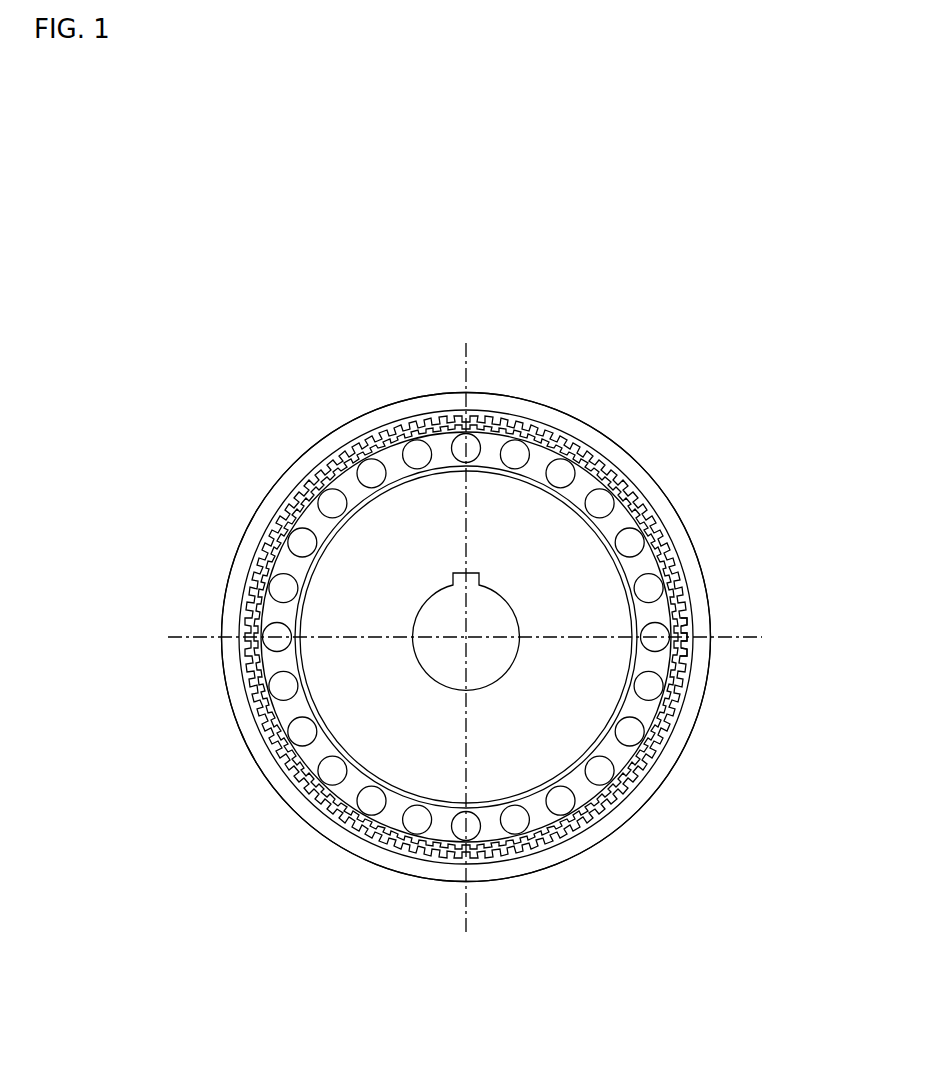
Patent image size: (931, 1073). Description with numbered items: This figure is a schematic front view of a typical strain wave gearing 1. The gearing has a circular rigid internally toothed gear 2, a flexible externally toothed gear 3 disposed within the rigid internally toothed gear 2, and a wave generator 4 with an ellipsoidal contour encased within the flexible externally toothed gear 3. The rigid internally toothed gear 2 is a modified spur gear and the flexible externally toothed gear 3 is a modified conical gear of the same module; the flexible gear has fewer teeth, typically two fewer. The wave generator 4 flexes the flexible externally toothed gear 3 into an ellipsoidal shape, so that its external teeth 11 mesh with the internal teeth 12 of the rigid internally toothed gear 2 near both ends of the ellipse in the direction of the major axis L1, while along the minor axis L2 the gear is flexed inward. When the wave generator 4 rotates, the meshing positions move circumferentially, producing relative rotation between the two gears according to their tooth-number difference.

The strain wave gearing 1 is at (651, 403).
The rigid internally toothed gear 2 is at (675, 530).
The flexible externally toothed gear 3 is at (678, 580).
The external teeth 11 is at (681, 606).
The internal teeth 12 is at (688, 626).
The wave generator 4 is at (610, 657).
The major axis L1 is at (466, 531).
The minor axis L2 is at (355, 638).